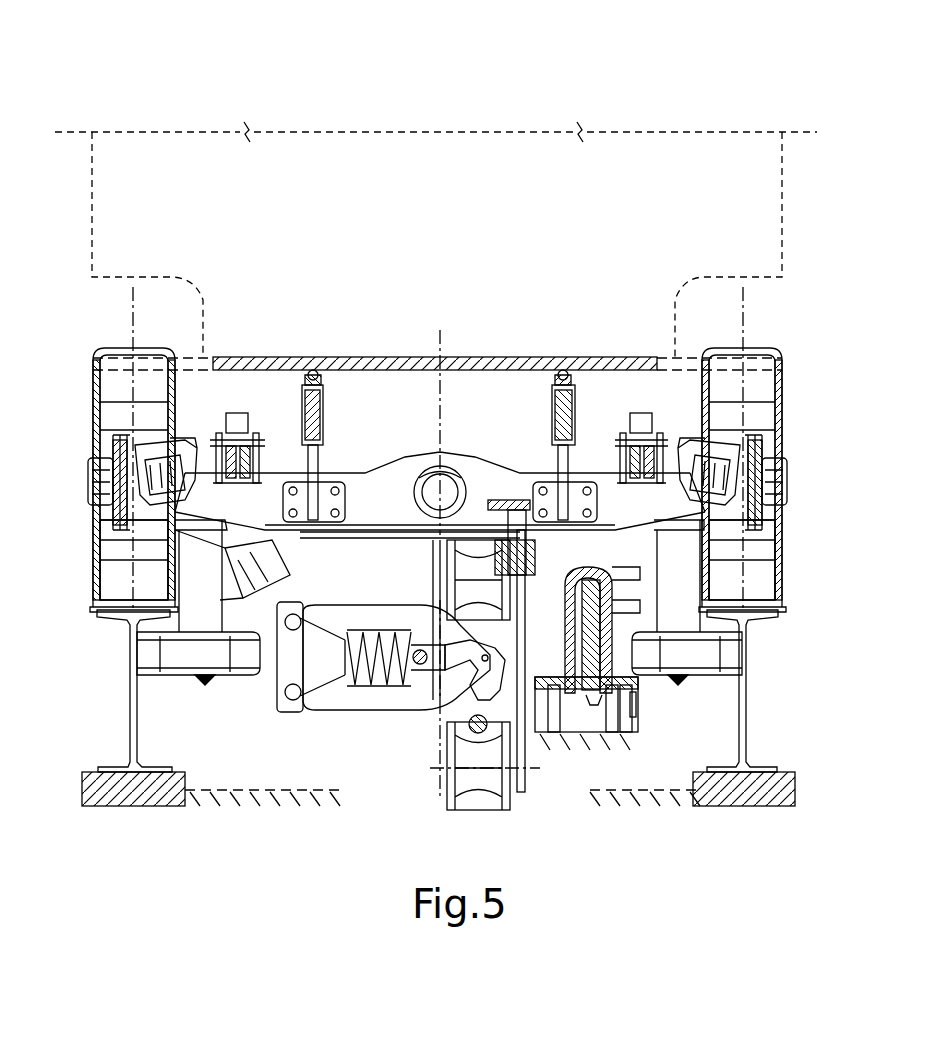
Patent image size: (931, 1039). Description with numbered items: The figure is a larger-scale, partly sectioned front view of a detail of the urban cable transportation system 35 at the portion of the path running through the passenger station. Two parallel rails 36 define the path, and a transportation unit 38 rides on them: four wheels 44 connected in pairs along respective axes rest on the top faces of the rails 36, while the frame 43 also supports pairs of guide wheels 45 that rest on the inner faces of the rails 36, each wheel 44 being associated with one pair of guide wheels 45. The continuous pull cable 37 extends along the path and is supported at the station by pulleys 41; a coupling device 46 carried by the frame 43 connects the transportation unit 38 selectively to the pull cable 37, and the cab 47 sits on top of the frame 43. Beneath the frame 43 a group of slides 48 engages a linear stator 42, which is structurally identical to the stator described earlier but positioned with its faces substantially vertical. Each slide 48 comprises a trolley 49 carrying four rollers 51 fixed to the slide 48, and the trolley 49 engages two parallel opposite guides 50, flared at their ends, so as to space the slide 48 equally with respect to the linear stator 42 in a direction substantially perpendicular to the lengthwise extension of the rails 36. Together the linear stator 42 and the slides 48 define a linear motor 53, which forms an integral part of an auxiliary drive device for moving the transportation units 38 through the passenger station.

The urban cable transportation system 35 is at (64, 356).
The rails 36 is at (140, 722).
The pull cable 37 is at (480, 798).
The transportation unit 38 is at (786, 352).
The pulleys 41 is at (472, 798).
The linear stator 42 is at (575, 708).
The frame 43 is at (486, 452).
The wheels 44 is at (120, 568).
The guide wheels 45 is at (222, 660).
The coupling device 46 is at (364, 710).
The cab 47 is at (470, 120).
The slides 48 is at (610, 710).
The trolley 49 is at (610, 665).
The guides 50 is at (535, 678).
The rollers 51 is at (556, 690).
The linear motor 53 is at (462, 696).